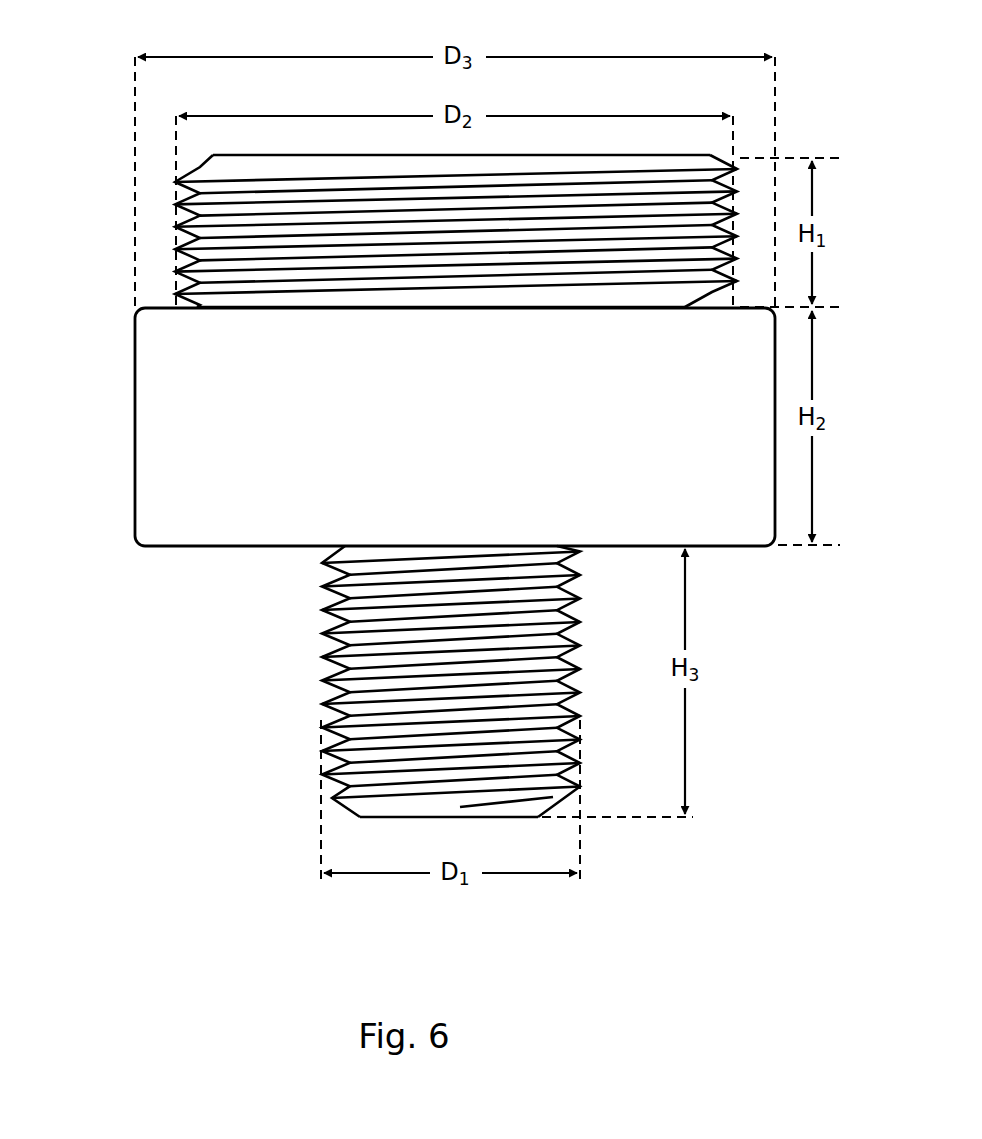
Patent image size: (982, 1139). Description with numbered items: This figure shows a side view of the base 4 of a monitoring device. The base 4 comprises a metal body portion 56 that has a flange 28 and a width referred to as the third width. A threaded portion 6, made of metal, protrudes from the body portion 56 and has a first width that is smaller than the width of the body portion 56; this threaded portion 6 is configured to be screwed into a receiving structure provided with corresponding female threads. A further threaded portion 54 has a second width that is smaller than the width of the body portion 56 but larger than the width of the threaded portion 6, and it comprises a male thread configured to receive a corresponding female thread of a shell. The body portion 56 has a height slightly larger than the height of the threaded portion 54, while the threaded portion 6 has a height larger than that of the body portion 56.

The base 4 is at (168, 566).
The threaded portion 6 is at (319, 672).
The flange 28 is at (157, 307).
The threaded portion 54 is at (167, 213).
The body portion 56 is at (122, 423).